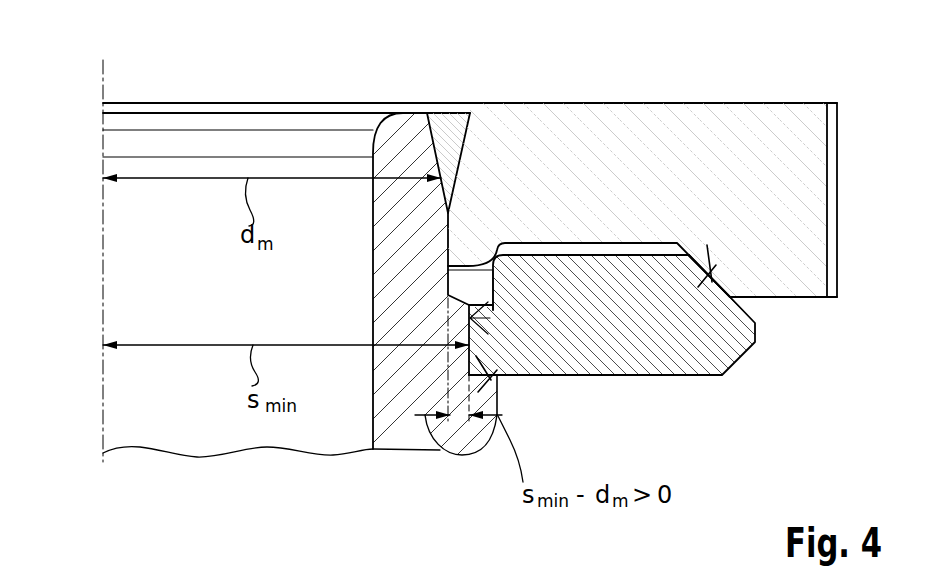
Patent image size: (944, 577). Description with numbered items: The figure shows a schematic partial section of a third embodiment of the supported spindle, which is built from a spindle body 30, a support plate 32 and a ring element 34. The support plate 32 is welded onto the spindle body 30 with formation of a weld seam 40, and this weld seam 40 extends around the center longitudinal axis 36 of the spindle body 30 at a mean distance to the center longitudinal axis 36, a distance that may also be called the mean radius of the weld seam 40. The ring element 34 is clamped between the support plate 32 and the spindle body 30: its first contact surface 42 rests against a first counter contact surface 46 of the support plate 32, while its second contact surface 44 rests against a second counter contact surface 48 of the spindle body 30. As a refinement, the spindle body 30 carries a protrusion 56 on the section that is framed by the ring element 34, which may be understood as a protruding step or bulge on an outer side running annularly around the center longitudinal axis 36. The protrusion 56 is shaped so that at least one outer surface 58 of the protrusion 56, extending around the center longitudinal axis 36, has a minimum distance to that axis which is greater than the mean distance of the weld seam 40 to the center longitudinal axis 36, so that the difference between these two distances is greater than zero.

The spindle body 30 is at (407, 398).
The support plate 32 is at (787, 200).
The ring element 34 is at (636, 335).
The center longitudinal axis 36 is at (103, 246).
The weld seam 40 is at (451, 140).
The first contact surface 42 is at (712, 283).
The second contact surface 44 is at (498, 382).
The first counter contact surface 46 is at (712, 283).
The second counter contact surface 48 is at (492, 366).
The protrusion 56 is at (450, 456).
The outer surface 58 is at (468, 318).